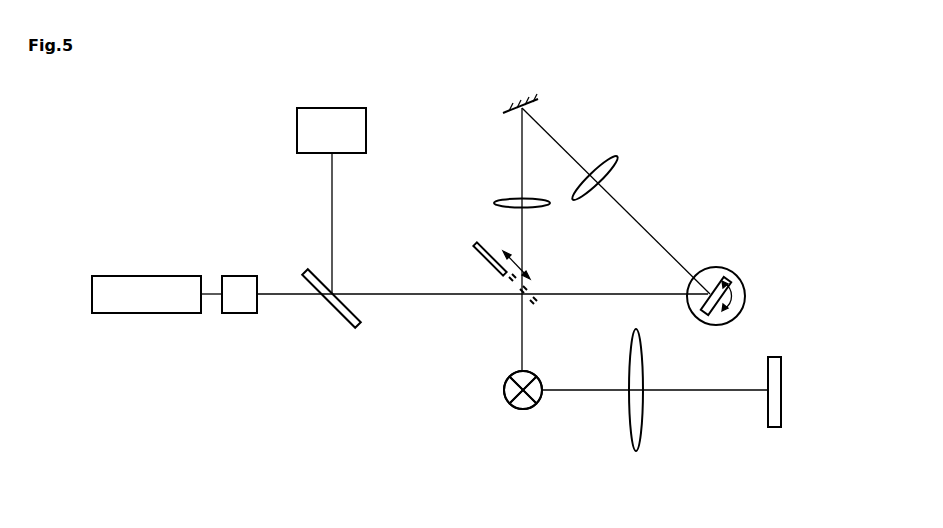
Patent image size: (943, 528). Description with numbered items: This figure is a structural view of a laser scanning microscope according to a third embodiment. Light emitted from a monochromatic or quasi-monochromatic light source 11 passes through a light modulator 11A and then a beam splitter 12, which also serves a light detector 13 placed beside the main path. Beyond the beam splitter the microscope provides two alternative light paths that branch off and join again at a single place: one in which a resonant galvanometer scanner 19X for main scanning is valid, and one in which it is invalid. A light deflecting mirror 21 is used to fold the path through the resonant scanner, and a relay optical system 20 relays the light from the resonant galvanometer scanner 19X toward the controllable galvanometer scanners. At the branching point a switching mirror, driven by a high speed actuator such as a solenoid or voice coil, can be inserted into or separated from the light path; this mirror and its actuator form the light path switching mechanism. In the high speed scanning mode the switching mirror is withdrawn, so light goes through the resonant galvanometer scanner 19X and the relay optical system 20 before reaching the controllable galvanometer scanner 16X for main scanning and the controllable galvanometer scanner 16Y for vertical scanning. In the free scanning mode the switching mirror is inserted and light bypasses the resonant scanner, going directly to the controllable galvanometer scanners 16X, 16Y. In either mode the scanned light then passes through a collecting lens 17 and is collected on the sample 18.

The light source 11 is at (157, 290).
The light modulator 11A is at (238, 278).
The beam splitter 12 is at (318, 272).
The light detector 13 is at (330, 118).
The light deflecting mirror 21 is at (505, 115).
The relay optical system 20 is at (549, 206).
The resonant galvanometer scanner 19X is at (740, 277).
The controllable galvanometer scanner 16X is at (507, 400).
The controllable galvanometer scanner 16Y is at (523, 390).
The collecting lens 17 is at (636, 452).
The sample 18 is at (775, 428).